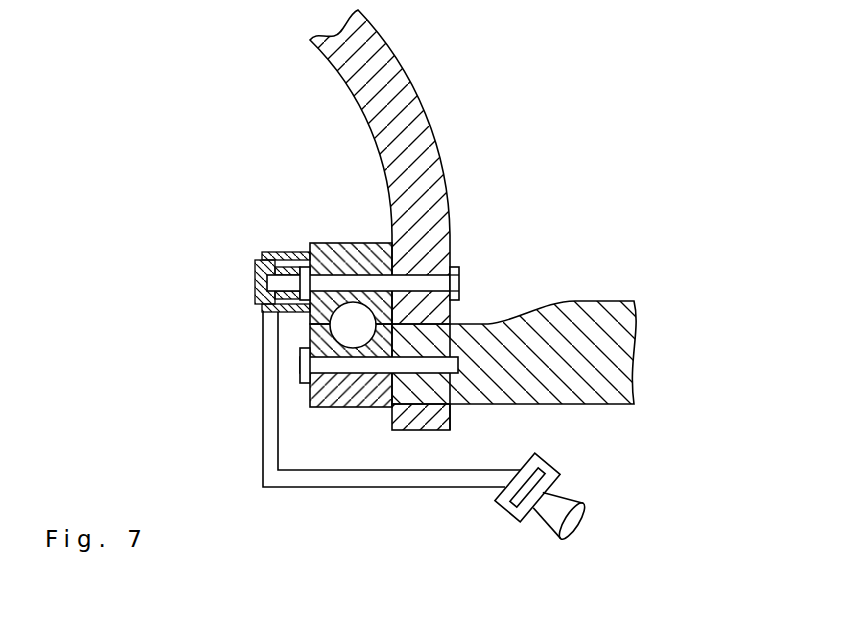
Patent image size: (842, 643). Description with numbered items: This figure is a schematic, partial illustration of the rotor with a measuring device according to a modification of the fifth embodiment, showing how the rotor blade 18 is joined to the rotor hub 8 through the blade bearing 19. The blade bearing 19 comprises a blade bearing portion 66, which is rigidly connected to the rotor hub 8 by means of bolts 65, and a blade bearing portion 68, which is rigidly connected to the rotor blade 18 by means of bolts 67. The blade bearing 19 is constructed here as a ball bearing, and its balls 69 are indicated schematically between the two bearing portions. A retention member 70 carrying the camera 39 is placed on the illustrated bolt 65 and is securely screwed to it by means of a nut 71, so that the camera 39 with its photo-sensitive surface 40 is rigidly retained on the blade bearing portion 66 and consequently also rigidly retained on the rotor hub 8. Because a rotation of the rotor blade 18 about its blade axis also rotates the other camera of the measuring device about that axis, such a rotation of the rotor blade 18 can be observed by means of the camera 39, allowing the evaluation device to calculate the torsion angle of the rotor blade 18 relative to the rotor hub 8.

The rotor hub 8 is at (412, 108).
The rotor blade 18 is at (594, 307).
The blade bearing 19 is at (296, 343).
The camera 39 is at (515, 522).
The photo-sensitive surface 40 is at (538, 469).
The bolts 65 is at (431, 283).
The blade bearing portion 66 is at (337, 243).
The bolts 67 is at (330, 367).
The blade bearing portion 68 is at (363, 407).
The balls 69 is at (340, 323).
The retention member 70 is at (268, 441).
The nut 71 is at (258, 277).